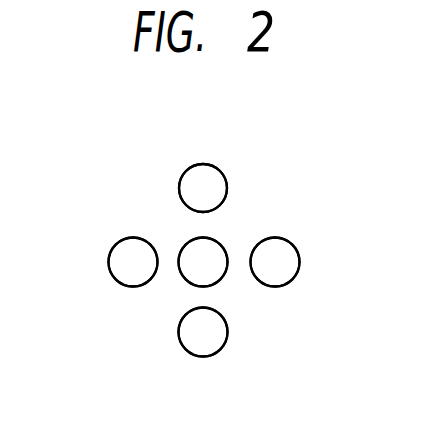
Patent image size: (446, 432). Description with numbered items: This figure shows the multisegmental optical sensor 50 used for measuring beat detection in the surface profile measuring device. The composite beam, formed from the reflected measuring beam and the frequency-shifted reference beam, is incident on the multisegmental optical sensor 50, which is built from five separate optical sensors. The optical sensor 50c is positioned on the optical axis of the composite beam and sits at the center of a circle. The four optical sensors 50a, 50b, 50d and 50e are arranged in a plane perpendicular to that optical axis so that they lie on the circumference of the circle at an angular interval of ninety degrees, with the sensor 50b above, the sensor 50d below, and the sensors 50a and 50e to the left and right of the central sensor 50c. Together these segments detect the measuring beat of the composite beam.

The multisegmental optical sensor 50 is at (278, 153).
The optical sensor 50a is at (120, 259).
The optical sensor 50b is at (204, 178).
The optical sensor 50c is at (196, 272).
The optical sensor 50d is at (217, 340).
The optical sensor 50e is at (285, 260).